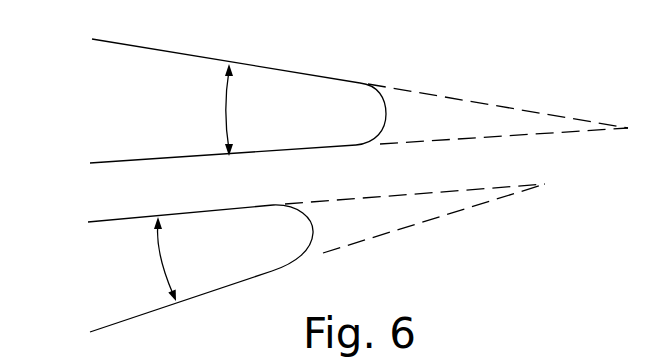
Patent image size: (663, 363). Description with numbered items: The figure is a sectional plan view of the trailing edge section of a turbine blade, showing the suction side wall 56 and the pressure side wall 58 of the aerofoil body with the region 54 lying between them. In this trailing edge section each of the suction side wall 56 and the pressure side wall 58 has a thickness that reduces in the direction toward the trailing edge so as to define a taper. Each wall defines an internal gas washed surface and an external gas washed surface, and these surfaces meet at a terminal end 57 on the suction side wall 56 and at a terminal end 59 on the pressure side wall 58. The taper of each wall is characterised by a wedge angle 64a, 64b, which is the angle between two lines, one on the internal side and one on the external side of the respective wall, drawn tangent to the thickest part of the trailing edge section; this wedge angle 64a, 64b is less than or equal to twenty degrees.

The suction side wall 56 is at (150, 124).
The flow passage 54 is at (170, 199).
The pressure side wall 58 is at (125, 291).
The terminal end 57 is at (396, 111).
The terminal end 59 is at (325, 233).
The wedge angle 64a is at (226, 97).
The wedge angle 64b is at (163, 251).